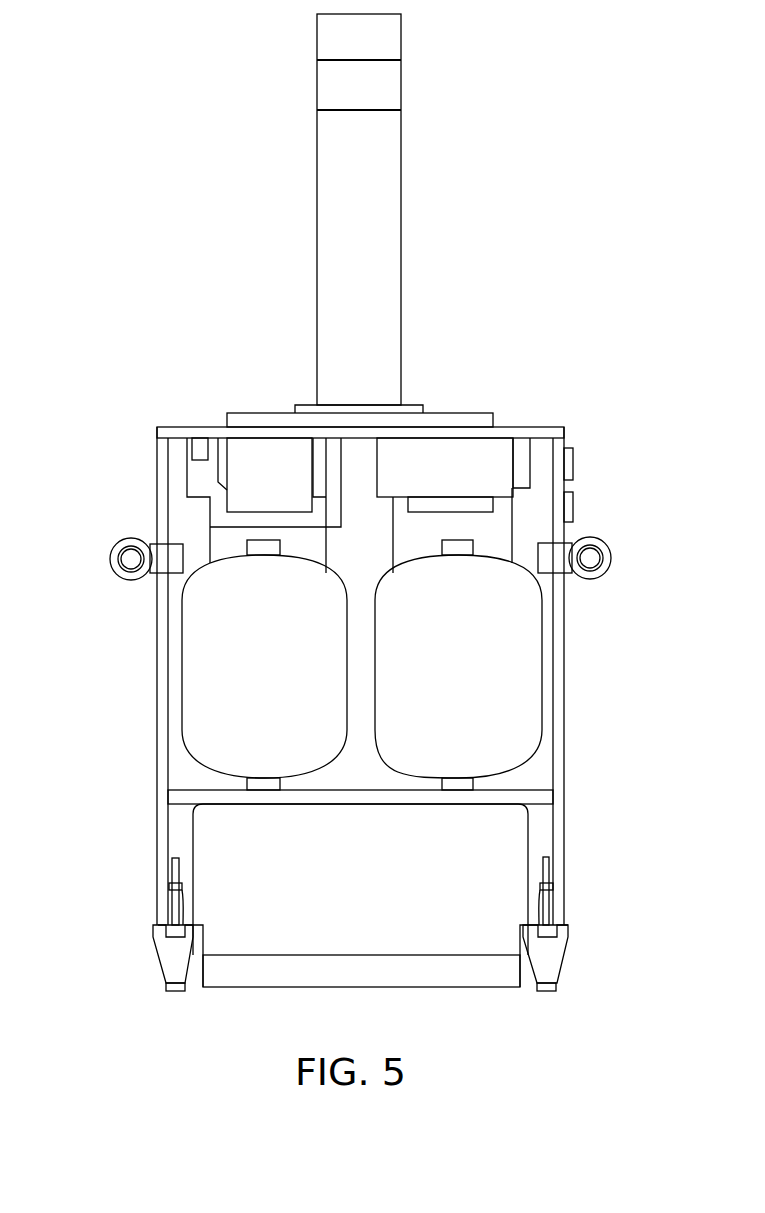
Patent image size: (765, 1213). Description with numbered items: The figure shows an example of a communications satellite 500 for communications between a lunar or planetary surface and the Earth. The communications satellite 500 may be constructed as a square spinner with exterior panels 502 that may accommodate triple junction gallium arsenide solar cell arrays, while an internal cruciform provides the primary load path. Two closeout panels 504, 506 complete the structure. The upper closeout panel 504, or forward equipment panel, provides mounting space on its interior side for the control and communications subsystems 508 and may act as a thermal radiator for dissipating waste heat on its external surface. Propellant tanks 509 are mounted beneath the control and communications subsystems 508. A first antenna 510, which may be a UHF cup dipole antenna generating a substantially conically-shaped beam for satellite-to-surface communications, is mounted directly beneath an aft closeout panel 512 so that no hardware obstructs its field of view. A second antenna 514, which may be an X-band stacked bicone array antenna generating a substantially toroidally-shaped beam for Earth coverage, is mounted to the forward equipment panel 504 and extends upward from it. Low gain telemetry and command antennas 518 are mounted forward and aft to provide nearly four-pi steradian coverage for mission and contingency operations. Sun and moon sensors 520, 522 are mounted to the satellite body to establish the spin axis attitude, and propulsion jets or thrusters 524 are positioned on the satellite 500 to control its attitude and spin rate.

The communications satellite 500 is at (533, 225).
The exterior panels 502 is at (157, 697).
The upper closeout panel 504 is at (198, 432).
The closeout panel 506 is at (253, 988).
The control and communications subsystems 508 is at (193, 477).
The propellant tanks 509 is at (192, 643).
The first antenna 510 is at (382, 904).
The aft closeout panel 512 is at (493, 797).
The second antenna 514 is at (401, 168).
The low gain telemetry and command antennas 518 is at (195, 448).
The sun sensor 520 is at (573, 465).
The moon sensor 522 is at (573, 505).
The propulsion jets or thrusters 524 is at (108, 559).